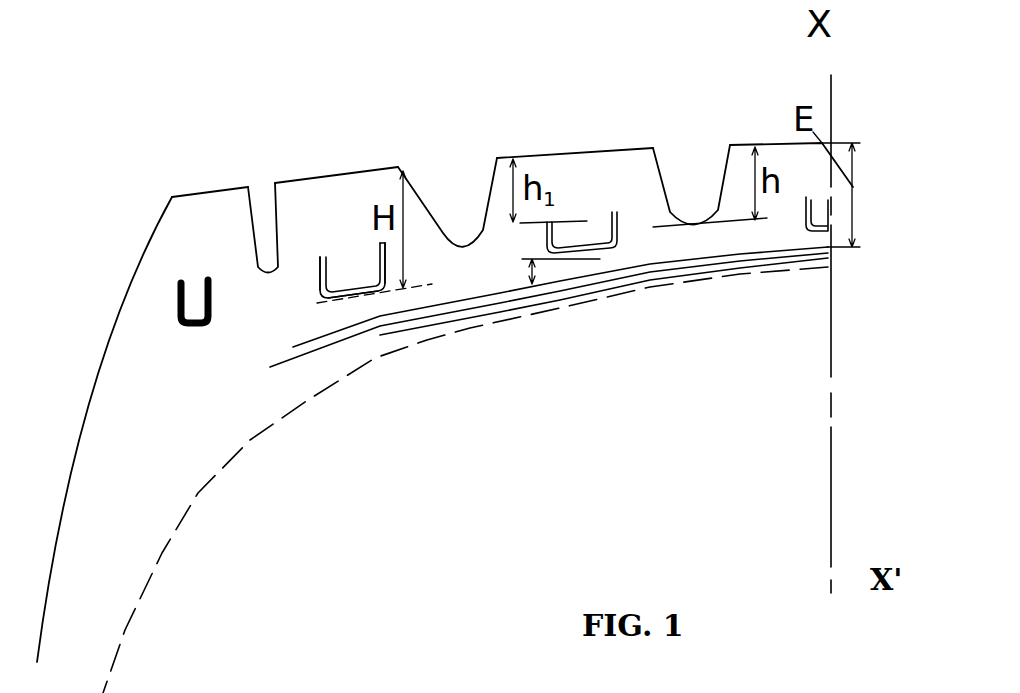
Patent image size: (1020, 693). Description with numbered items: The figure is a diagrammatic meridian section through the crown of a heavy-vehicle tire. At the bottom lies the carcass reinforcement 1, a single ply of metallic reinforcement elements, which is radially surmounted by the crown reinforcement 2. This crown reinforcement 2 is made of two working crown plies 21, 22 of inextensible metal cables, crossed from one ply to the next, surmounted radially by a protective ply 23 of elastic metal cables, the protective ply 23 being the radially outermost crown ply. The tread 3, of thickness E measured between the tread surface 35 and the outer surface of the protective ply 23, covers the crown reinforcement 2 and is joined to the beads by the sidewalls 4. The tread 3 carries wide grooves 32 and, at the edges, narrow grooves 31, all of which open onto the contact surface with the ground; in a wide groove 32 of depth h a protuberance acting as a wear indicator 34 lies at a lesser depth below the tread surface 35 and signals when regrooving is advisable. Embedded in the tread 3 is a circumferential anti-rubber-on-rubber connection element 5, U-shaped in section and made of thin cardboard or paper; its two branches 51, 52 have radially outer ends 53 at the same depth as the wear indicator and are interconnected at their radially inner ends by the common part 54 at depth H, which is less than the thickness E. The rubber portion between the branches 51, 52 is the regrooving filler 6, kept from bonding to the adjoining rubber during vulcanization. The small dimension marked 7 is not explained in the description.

The carcass reinforcement 1 is at (127, 631).
The crown reinforcement 2 is at (549, 325).
The tread 3 is at (560, 175).
The sidewalls 4 is at (143, 485).
The circumferential anti-rubber-on-rubber connection element 5 is at (332, 297).
The regrooving filler 6 is at (578, 243).
The gap 7 is at (550, 276).
The working crown ply 21 is at (493, 313).
The working crown ply 22 is at (672, 270).
The protective ply 23 is at (747, 252).
The narrow grooves 31 is at (268, 220).
The wide grooves 32 is at (455, 190).
The wear indicator 34 is at (695, 217).
The tread surface 35 is at (332, 167).
The branch 51 is at (318, 272).
The branch 52 is at (383, 270).
The radially outer ends 53 is at (330, 212).
The common part 54 is at (580, 253).